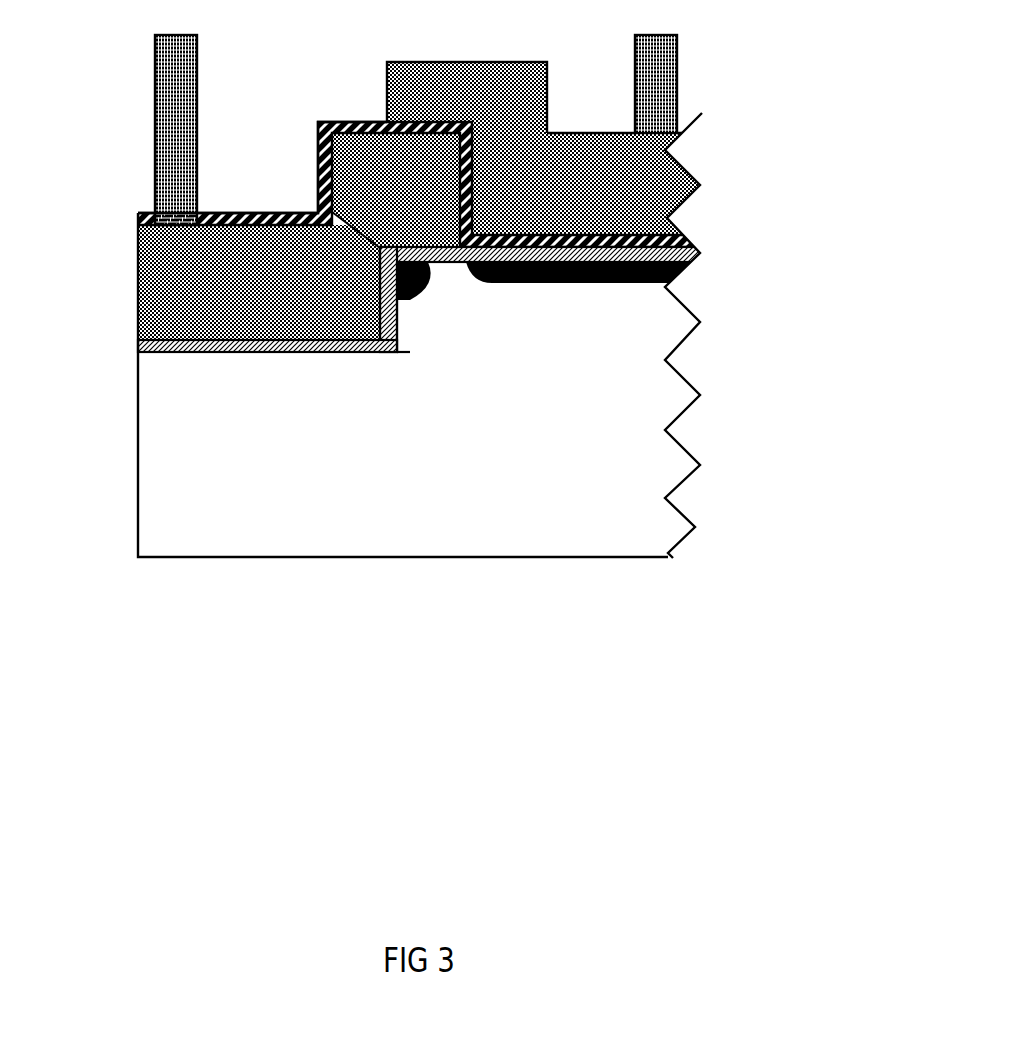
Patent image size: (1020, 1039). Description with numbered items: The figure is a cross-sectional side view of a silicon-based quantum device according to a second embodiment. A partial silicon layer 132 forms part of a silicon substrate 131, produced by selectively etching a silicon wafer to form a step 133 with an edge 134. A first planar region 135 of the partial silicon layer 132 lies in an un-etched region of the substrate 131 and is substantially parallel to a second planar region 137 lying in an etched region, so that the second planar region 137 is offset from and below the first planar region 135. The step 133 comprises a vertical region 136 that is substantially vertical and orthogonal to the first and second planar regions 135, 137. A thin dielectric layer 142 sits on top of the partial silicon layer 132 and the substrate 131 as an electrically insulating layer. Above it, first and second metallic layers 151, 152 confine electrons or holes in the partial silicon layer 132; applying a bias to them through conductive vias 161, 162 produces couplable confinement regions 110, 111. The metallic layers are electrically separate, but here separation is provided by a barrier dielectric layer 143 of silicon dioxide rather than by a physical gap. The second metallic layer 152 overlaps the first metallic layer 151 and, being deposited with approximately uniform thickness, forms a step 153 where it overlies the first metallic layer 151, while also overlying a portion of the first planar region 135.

The couplable confinement region 110 is at (421, 312).
The couplable confinement region 111 is at (591, 295).
The silicon substrate 131 is at (633, 477).
The partial silicon layer 132 is at (667, 319).
The step 133 is at (382, 317).
The edge 134 is at (374, 237).
The first planar region 135 is at (468, 279).
The vertical region 136 is at (401, 346).
The second planar region 137 is at (275, 367).
The thin dielectric layer 142 is at (689, 258).
The barrier dielectric layer 143 is at (376, 118).
The first metallic layer 151 is at (151, 297).
The second metallic layer 152 is at (662, 213).
The step 153 is at (559, 96).
The conductive via 161 is at (154, 95).
The conductive via 162 is at (682, 97).